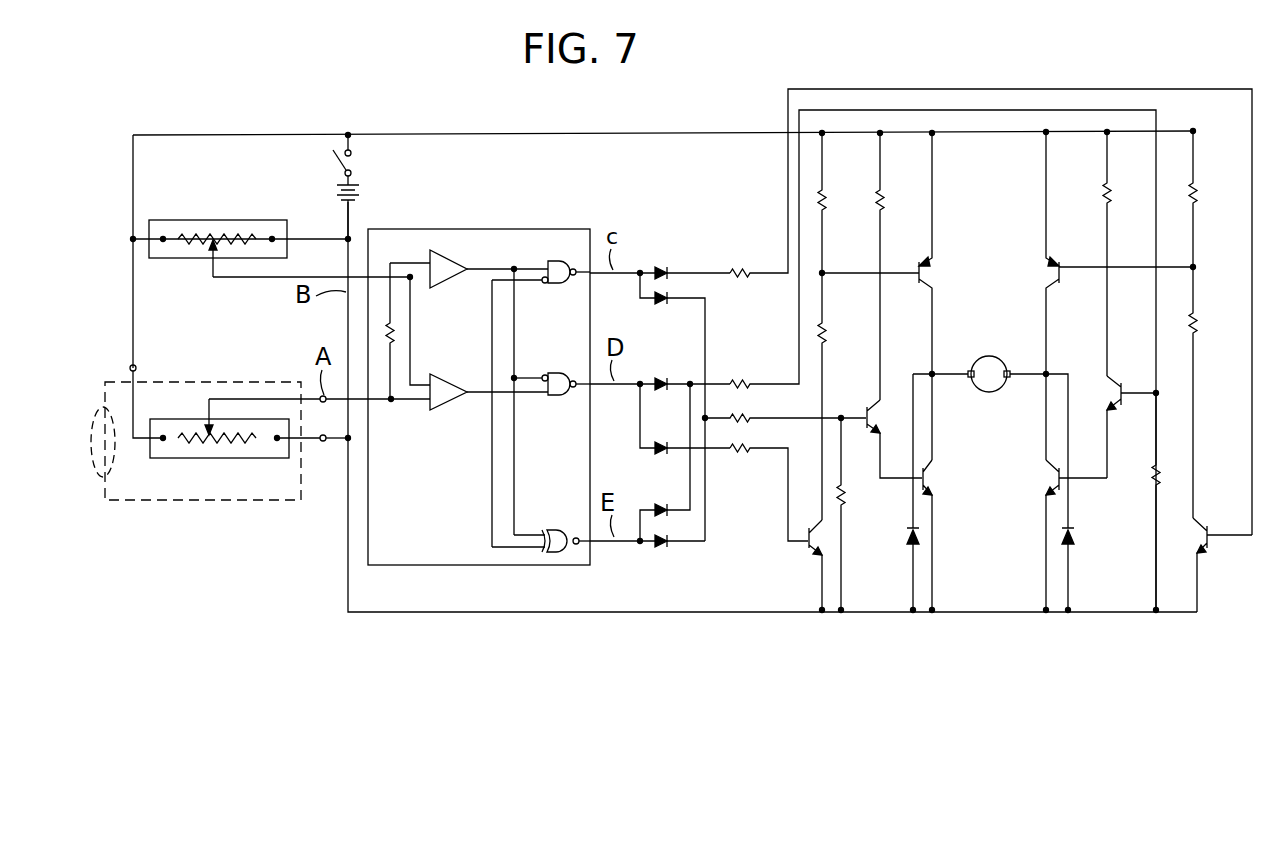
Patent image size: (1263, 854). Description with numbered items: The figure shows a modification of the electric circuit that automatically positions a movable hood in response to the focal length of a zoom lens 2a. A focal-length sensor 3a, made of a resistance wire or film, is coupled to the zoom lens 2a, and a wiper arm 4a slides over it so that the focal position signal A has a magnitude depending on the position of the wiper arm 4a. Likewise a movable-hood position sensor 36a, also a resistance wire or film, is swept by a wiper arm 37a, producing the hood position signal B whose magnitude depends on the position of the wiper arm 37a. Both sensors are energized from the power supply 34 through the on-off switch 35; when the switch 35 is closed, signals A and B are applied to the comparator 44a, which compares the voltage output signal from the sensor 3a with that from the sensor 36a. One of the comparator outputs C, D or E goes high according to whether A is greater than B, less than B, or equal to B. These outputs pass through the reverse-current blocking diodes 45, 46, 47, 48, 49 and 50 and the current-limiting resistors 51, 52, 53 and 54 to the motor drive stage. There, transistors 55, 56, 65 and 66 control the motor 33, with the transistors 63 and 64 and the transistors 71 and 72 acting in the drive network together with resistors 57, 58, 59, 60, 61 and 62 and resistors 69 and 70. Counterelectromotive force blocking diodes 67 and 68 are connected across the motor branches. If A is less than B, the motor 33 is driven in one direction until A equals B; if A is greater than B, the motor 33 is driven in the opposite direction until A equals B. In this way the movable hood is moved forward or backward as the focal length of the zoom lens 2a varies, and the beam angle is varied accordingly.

The zoom lens 2a is at (100, 421).
The focal-length sensor 3a is at (216, 454).
The wiper arm 4a is at (206, 408).
The motor 33 is at (990, 356).
The power supply 34 is at (332, 192).
The on-off switch 35 is at (352, 163).
The movable-hood position sensor 36a is at (190, 220).
The wiper arm 37a is at (207, 270).
The comparator 44a is at (564, 229).
The reverse-current blocking diode 45 is at (661, 266).
The reverse-current blocking diode 46 is at (652, 302).
The reverse-current blocking diode 47 is at (661, 378).
The reverse-current blocking diode 48 is at (661, 442).
The reverse-current blocking diode 49 is at (661, 504).
The reverse-current blocking diode 50 is at (661, 548).
The current-limiting resistor 51 is at (738, 268).
The current-limiting resistor 52 is at (740, 379).
The current-limiting resistor 53 is at (753, 415).
The current-limiting resistor 54 is at (741, 455).
The transistor 55 is at (935, 278).
The transistor 56 is at (1050, 275).
The resistor 57 is at (883, 202).
The resistor 58 is at (1101, 195).
The resistor 59 is at (826, 202).
The resistor 60 is at (1198, 195).
The resistor 61 is at (828, 334).
The resistor 62 is at (1198, 325).
The transistor 63 is at (876, 404).
The transistor 64 is at (1114, 395).
The transistor 65 is at (938, 478).
The transistor 66 is at (1046, 482).
The counterelectromotive force blocking diode 67 is at (906, 545).
The counterelectromotive force blocking diode 68 is at (1077, 538).
The resistor 69 is at (847, 500).
The resistor 70 is at (1152, 480).
The transistor 71 is at (805, 547).
The transistor 72 is at (1202, 523).